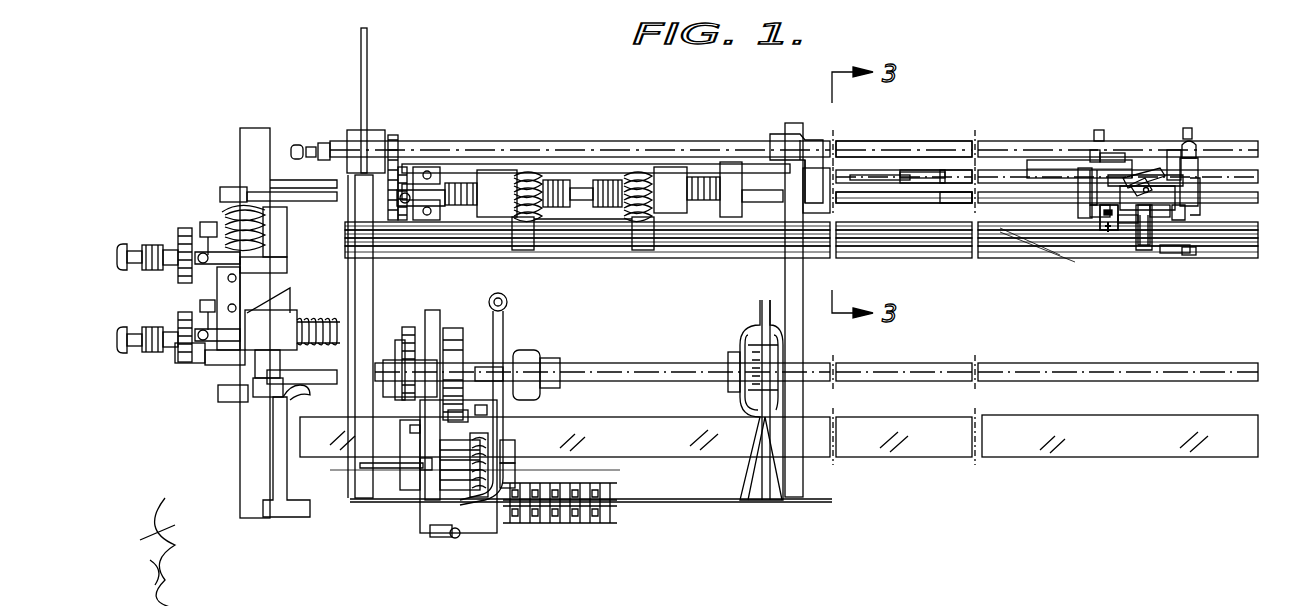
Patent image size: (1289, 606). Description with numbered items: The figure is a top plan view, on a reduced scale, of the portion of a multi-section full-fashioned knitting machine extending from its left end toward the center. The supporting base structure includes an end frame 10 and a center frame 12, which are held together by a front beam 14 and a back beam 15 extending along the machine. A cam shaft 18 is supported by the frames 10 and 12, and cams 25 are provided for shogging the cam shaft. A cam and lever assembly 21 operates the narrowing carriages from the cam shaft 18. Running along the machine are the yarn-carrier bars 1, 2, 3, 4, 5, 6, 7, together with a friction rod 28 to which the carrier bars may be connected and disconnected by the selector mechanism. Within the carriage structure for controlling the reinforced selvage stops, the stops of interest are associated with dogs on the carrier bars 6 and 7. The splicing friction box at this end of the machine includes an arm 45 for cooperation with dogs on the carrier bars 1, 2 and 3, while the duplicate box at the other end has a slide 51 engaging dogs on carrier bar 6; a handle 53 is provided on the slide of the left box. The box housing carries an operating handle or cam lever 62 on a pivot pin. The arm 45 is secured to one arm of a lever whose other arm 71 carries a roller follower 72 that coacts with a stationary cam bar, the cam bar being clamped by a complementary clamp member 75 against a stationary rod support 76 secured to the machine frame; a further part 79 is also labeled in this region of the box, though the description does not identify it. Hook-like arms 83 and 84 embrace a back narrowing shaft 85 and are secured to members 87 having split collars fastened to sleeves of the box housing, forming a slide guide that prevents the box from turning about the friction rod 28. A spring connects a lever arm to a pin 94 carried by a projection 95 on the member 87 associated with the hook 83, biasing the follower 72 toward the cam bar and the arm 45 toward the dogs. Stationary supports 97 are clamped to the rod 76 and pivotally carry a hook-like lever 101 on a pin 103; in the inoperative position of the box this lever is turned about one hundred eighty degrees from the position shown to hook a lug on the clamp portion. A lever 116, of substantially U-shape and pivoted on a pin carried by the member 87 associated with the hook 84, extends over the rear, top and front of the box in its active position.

The yarn-carrier bar 1 is at (565, 228).
The yarn-carrier bar 2 is at (595, 230).
The yarn-carrier bar 3 is at (620, 240).
The yarn-carrier bar 4 is at (673, 240).
The yarn-carrier bar 5 is at (692, 247).
The yarn-carrier bar 6 is at (710, 248).
The yarn-carrier bar 7 is at (735, 255).
The end frame 10 is at (243, 433).
The center frame 12 is at (363, 498).
The front beam 14 is at (1020, 448).
The back beam 15 is at (905, 207).
The cam shaft 18 is at (887, 368).
The cam and lever assembly 21 is at (322, 472).
The cam 25 is at (490, 316).
The friction rod 28 is at (960, 192).
The arm 45 is at (1108, 212).
The slide 51 is at (1190, 147).
The handle 53 is at (1145, 240).
The operating handle or cam lever 62 is at (1172, 150).
The arm 71 is at (1190, 248).
The roller follower 72 is at (1130, 172).
The clamp member 75 is at (1032, 163).
The stationary rod support 76 is at (947, 177).
The bolt 79 is at (1118, 217).
The hook-like arm 83 is at (1107, 150).
The hook-like arm 84 is at (1192, 153).
The back narrowing shaft 85 is at (878, 142).
The member 87 is at (1083, 173).
The pin 94 is at (1133, 170).
The projection 95 is at (1093, 150).
The stationary support 97 is at (923, 173).
The hook-like lever 101 is at (862, 177).
The pin 103 is at (923, 180).
The lever 116 is at (1195, 153).